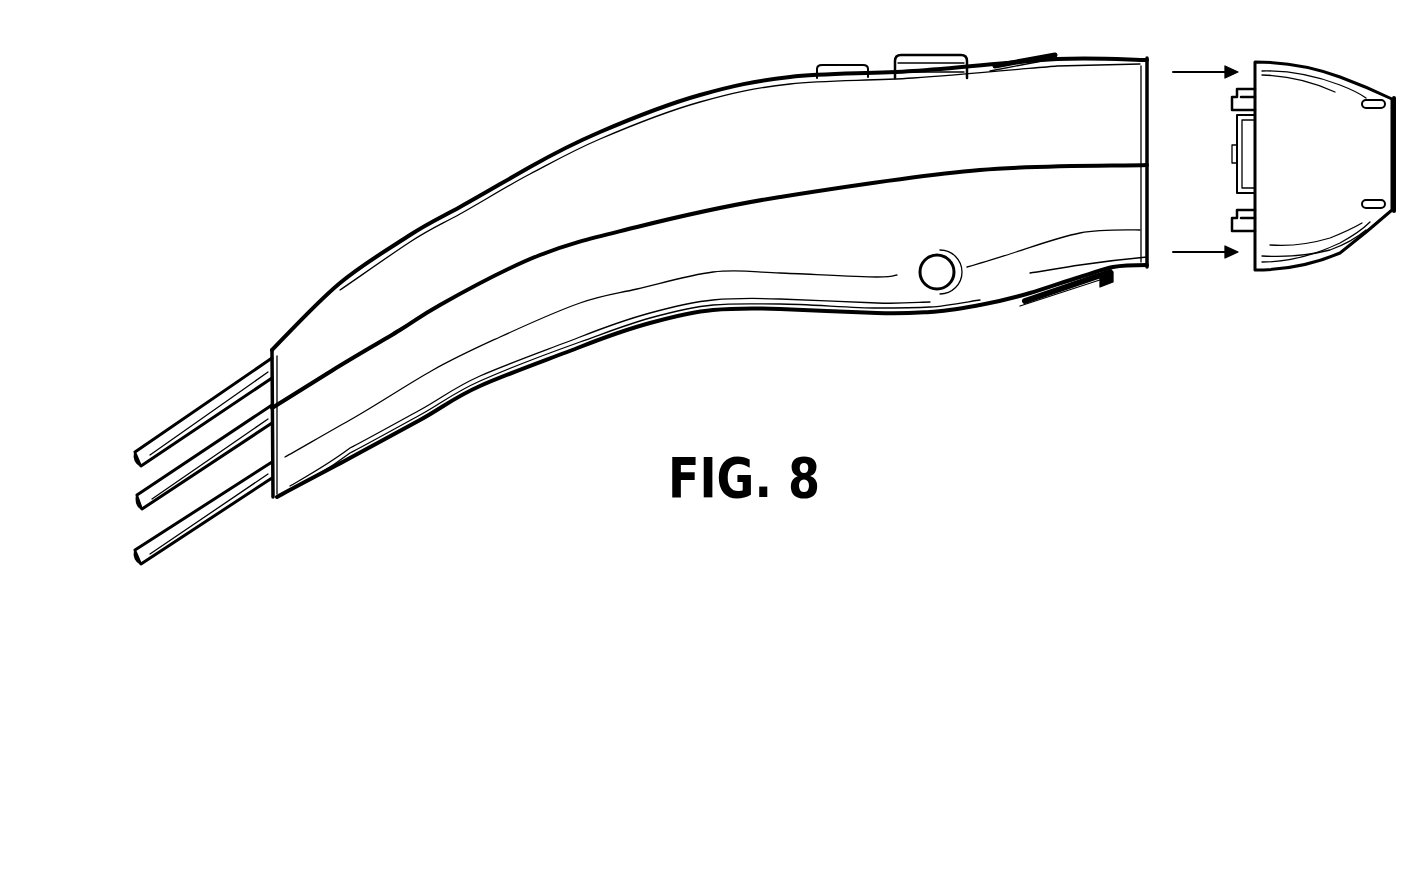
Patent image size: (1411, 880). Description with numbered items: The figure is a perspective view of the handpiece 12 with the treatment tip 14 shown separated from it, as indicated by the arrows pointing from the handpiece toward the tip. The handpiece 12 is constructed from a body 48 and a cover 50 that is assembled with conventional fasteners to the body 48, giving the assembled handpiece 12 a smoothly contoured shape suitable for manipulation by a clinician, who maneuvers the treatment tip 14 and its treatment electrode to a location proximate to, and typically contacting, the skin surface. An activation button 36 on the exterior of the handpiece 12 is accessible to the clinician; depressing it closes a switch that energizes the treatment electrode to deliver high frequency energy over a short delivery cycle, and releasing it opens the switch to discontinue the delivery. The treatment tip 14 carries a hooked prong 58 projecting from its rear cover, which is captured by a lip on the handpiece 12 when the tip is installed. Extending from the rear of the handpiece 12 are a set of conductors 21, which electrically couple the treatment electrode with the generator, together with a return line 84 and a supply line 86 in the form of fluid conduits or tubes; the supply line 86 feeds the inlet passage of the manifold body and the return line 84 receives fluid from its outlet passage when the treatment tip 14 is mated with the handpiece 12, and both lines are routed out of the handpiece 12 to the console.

The handpiece 12 is at (600, 130).
The treatment tip 14 is at (1336, 76).
The conductors 21 is at (162, 541).
The activation button 36 is at (948, 52).
The body 48 is at (563, 330).
The cover 50 is at (463, 217).
The hooked prong 58 is at (1230, 99).
The return line 84 is at (148, 487).
The supply line 86 is at (190, 428).